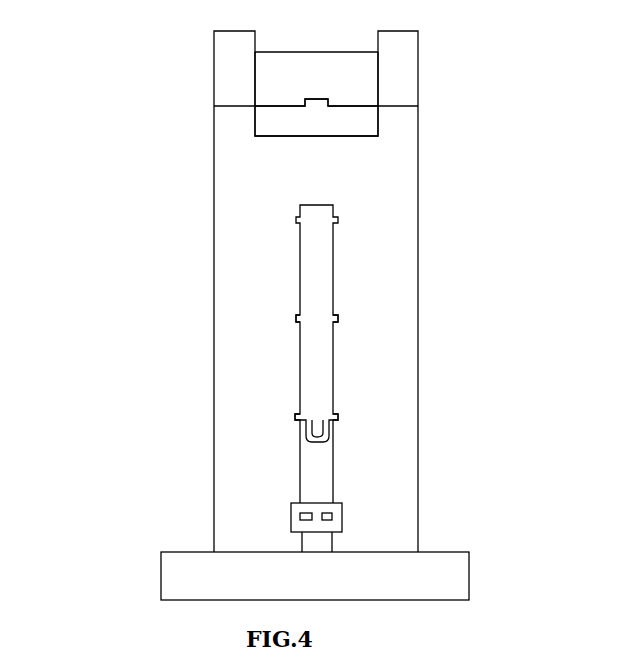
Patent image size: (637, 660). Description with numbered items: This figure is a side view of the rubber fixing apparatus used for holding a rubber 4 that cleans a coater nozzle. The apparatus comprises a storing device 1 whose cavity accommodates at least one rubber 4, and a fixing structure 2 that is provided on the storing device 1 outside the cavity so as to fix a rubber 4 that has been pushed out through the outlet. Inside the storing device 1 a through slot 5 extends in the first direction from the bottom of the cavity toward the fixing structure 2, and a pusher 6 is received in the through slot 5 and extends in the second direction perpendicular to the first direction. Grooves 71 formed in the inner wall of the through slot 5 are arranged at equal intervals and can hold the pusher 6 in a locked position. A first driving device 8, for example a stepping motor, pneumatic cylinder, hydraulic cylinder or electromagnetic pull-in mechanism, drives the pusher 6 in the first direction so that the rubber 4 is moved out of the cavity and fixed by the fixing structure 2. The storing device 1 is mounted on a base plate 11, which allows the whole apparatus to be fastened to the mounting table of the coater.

The storing device 1 is at (243, 362).
The fixing structure 2 is at (321, 81).
The rubber 4 is at (320, 453).
The through slot 5 is at (312, 278).
The pusher 6 is at (299, 517).
The first driving device 8 is at (309, 541).
The base plate 11 is at (197, 575).
The grooves 71 is at (335, 318).